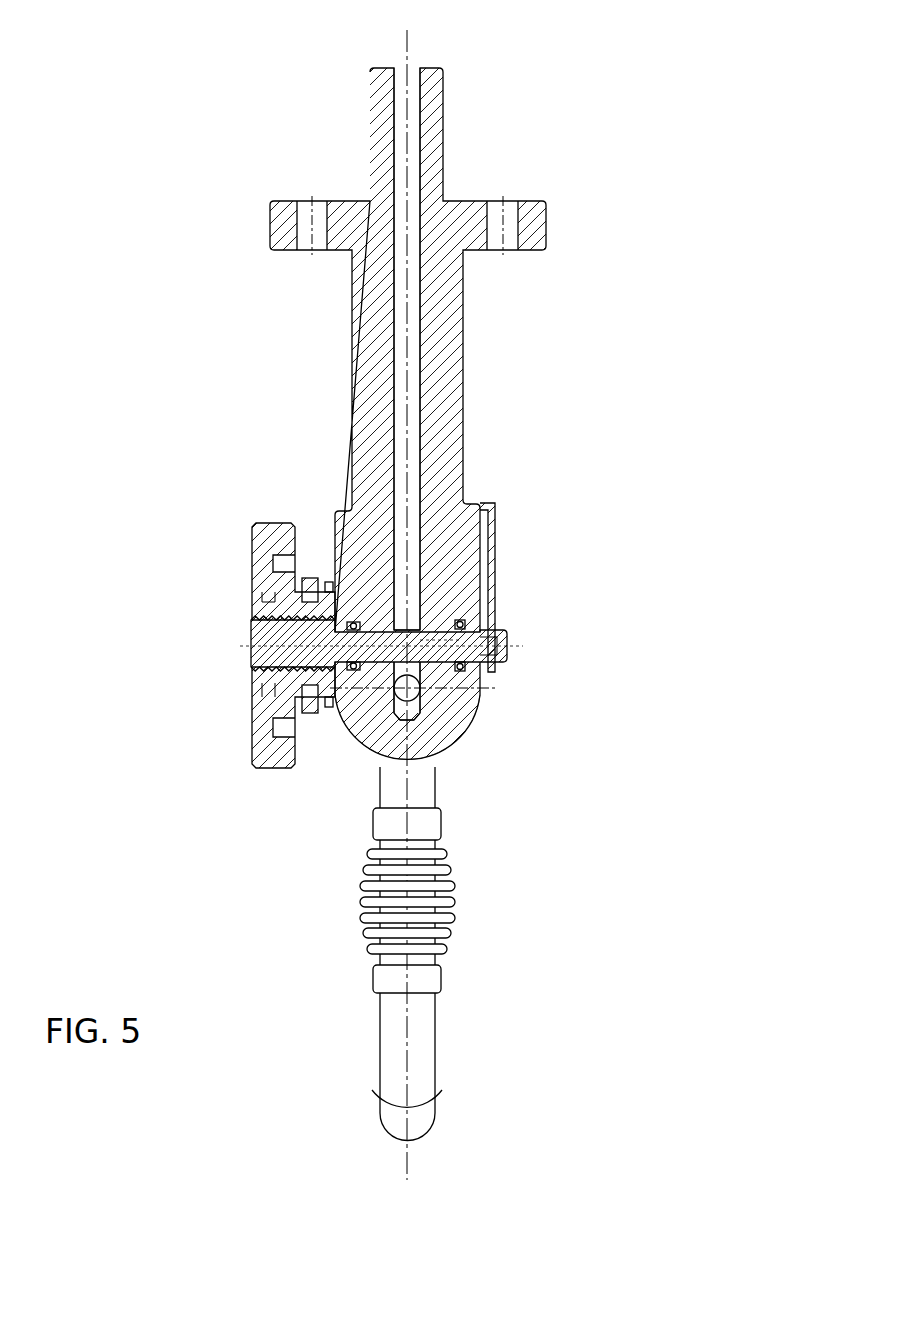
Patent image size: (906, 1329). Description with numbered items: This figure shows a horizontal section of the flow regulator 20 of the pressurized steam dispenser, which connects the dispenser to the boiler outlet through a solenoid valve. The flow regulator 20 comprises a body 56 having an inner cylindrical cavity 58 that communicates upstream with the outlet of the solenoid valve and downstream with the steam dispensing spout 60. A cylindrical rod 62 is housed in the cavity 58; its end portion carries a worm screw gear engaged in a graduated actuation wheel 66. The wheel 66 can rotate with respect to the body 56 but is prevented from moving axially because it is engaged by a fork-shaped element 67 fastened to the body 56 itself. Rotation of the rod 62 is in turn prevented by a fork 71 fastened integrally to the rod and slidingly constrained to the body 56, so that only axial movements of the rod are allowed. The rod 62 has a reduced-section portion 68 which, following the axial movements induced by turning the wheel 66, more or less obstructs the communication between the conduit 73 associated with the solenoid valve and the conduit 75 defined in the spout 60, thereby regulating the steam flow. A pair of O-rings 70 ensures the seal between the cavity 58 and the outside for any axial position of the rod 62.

The flow regulator 20 is at (540, 671).
The body 56 is at (363, 383).
The inner cylindrical cavity 58 is at (397, 700).
The steam dispensing spout 60 is at (418, 1058).
The cylindrical rod 62 is at (382, 633).
The graduated actuation wheel 66 is at (270, 750).
The fork-shaped element 67 is at (310, 588).
The reduced-section portion 68 is at (437, 652).
The O-rings 70 is at (458, 622).
The fork 71 is at (490, 502).
The conduit 73 is at (403, 345).
The conduit 75 is at (410, 692).